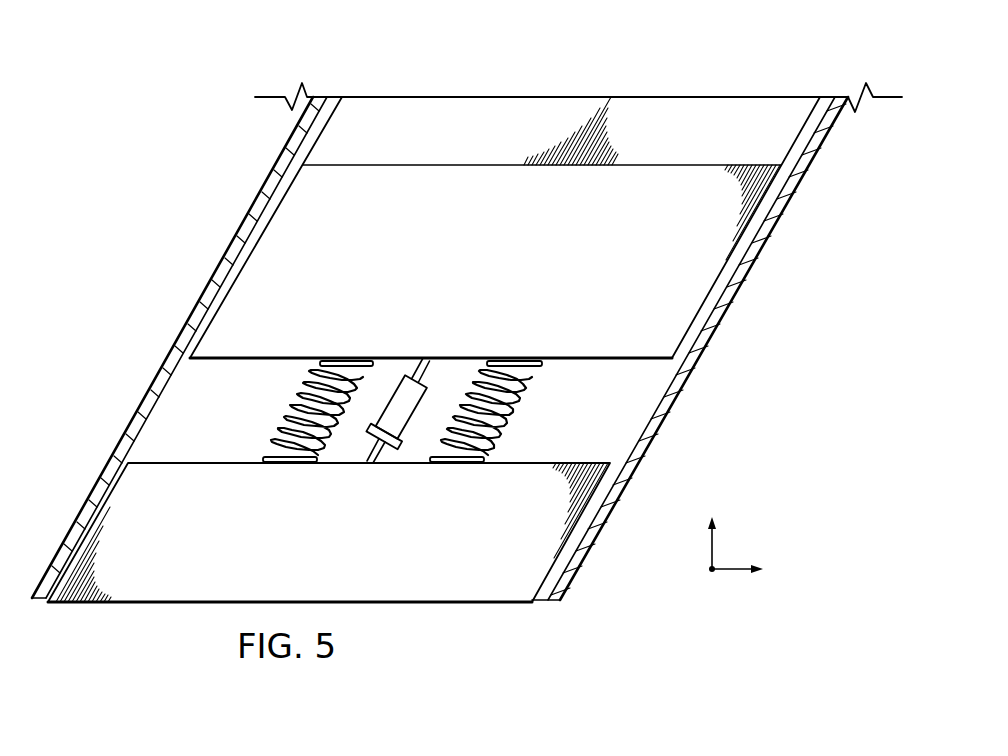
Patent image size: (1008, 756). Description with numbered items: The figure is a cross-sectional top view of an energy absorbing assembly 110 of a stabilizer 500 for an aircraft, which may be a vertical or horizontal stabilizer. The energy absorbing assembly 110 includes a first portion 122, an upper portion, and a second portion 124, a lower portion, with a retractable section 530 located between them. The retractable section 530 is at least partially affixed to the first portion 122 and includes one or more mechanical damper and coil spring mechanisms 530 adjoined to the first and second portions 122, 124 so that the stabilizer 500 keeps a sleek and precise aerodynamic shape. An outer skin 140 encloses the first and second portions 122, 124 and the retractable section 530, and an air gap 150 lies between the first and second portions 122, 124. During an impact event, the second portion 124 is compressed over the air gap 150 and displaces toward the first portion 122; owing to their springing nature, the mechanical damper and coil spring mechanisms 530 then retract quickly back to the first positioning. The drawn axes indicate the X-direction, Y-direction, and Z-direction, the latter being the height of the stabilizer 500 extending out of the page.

The stabilizer 500 is at (467, 332).
The energy absorbing assembly 110 is at (808, 249).
The first portion 122 is at (443, 177).
The second portion 124 is at (503, 593).
The outer skin 140 is at (738, 292).
The air gap 150 is at (644, 398).
The retractable section 530 is at (263, 418).